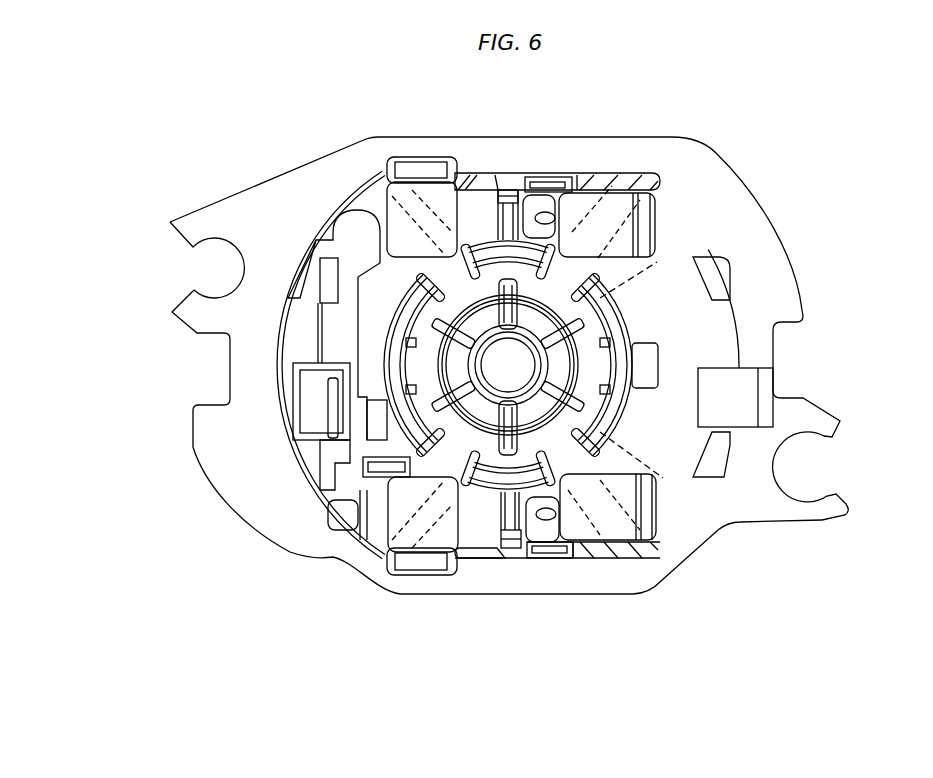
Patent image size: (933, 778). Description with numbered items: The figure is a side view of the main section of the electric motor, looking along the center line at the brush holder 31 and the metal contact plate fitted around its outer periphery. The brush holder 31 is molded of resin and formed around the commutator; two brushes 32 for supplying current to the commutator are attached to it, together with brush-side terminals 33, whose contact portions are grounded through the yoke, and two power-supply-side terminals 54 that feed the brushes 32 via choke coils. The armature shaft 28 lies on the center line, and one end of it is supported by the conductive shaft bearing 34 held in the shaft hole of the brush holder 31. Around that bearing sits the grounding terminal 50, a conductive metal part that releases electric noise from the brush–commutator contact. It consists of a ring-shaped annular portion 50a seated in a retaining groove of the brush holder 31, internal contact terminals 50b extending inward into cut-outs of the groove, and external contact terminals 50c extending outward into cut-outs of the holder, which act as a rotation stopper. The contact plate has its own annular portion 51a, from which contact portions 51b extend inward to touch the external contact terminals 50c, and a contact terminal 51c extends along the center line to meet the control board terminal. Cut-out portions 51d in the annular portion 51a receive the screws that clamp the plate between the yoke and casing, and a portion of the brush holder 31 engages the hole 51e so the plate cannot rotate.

The armature shaft 28 is at (500, 558).
The brush holder 31 is at (690, 328).
The brush 32 is at (658, 261).
The brush-side terminal 33 is at (546, 176).
The shaft bearing 34 is at (511, 560).
The grounding terminal 50 is at (495, 300).
The annular portion 50a is at (508, 190).
The internal contact terminal 50b is at (795, 378).
The external contact terminal 50c is at (413, 182).
The annular portion 51a is at (452, 590).
The contact portion 51b is at (385, 192).
The contact terminal 51c is at (763, 412).
The cut-out portion 51d is at (232, 262).
The hole 51e is at (645, 317).
The power-supply-side terminal 54 is at (340, 314).